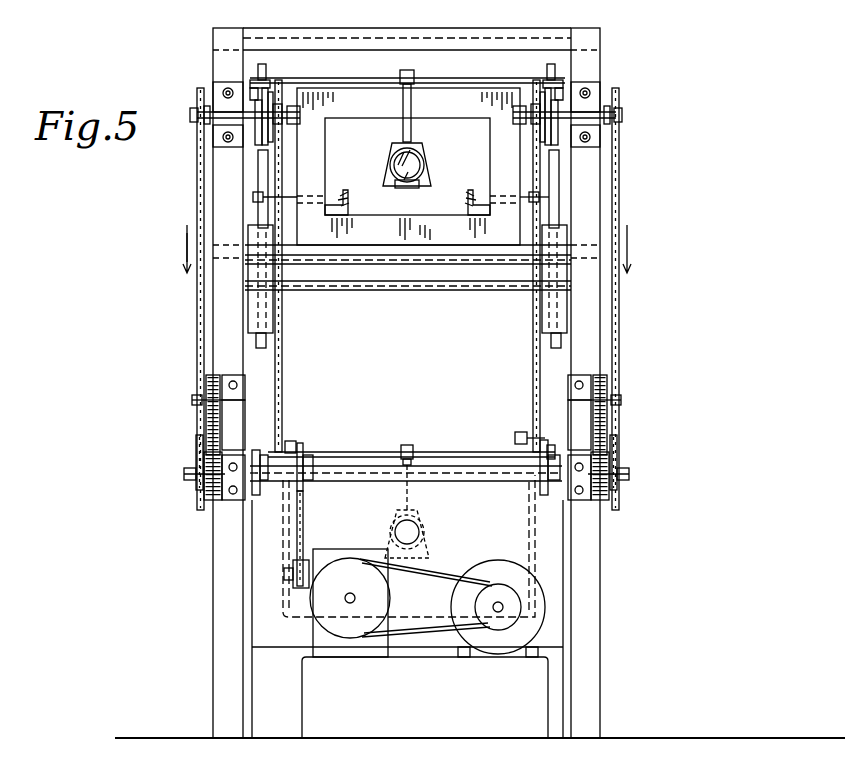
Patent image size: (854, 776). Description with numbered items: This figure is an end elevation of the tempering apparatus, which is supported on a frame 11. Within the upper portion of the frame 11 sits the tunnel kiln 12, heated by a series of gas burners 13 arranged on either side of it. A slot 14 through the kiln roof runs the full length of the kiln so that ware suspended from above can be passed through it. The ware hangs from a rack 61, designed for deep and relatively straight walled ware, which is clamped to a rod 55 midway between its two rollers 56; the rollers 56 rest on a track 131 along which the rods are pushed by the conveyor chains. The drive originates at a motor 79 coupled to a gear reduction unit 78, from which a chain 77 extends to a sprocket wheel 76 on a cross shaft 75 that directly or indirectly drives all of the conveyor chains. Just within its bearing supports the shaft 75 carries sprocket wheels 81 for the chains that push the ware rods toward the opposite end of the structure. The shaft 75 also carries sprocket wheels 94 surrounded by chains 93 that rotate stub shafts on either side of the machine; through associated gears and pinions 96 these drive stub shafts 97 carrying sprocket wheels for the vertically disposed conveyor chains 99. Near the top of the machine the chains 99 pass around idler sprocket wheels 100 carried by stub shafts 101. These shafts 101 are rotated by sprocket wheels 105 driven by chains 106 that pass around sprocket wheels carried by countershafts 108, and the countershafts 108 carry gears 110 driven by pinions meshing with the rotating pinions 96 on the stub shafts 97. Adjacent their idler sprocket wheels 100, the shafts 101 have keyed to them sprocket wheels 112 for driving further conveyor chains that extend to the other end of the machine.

The frame 11 is at (604, 210).
The tunnel kiln 12 is at (506, 113).
The gas burners 13 is at (252, 198).
The slot 14 is at (412, 94).
The rod 55 is at (356, 82).
The roller 56 is at (266, 78).
The rack 61 is at (425, 176).
The cross shaft 75 is at (340, 470).
The sprocket wheel 76 is at (305, 458).
The chain 77 is at (302, 530).
The gear reduction unit 78 is at (334, 558).
The motor 79 is at (499, 566).
The sprocket wheels 81 is at (540, 470).
The chains 93 is at (612, 456).
The sprocket wheels 94 is at (621, 466).
The pinions 96 is at (610, 432).
The stub shafts 97 is at (292, 434).
The conveyor chains 99 is at (283, 362).
The idler sprocket wheels 100 is at (284, 96).
The stub shafts 101 is at (194, 116).
The sprocket wheels 105 is at (238, 128).
The chains 106 is at (197, 318).
The countershafts 108 is at (617, 402).
The gears 110 is at (213, 376).
The sprocket wheels 112 is at (262, 135).
The track 131 is at (256, 86).